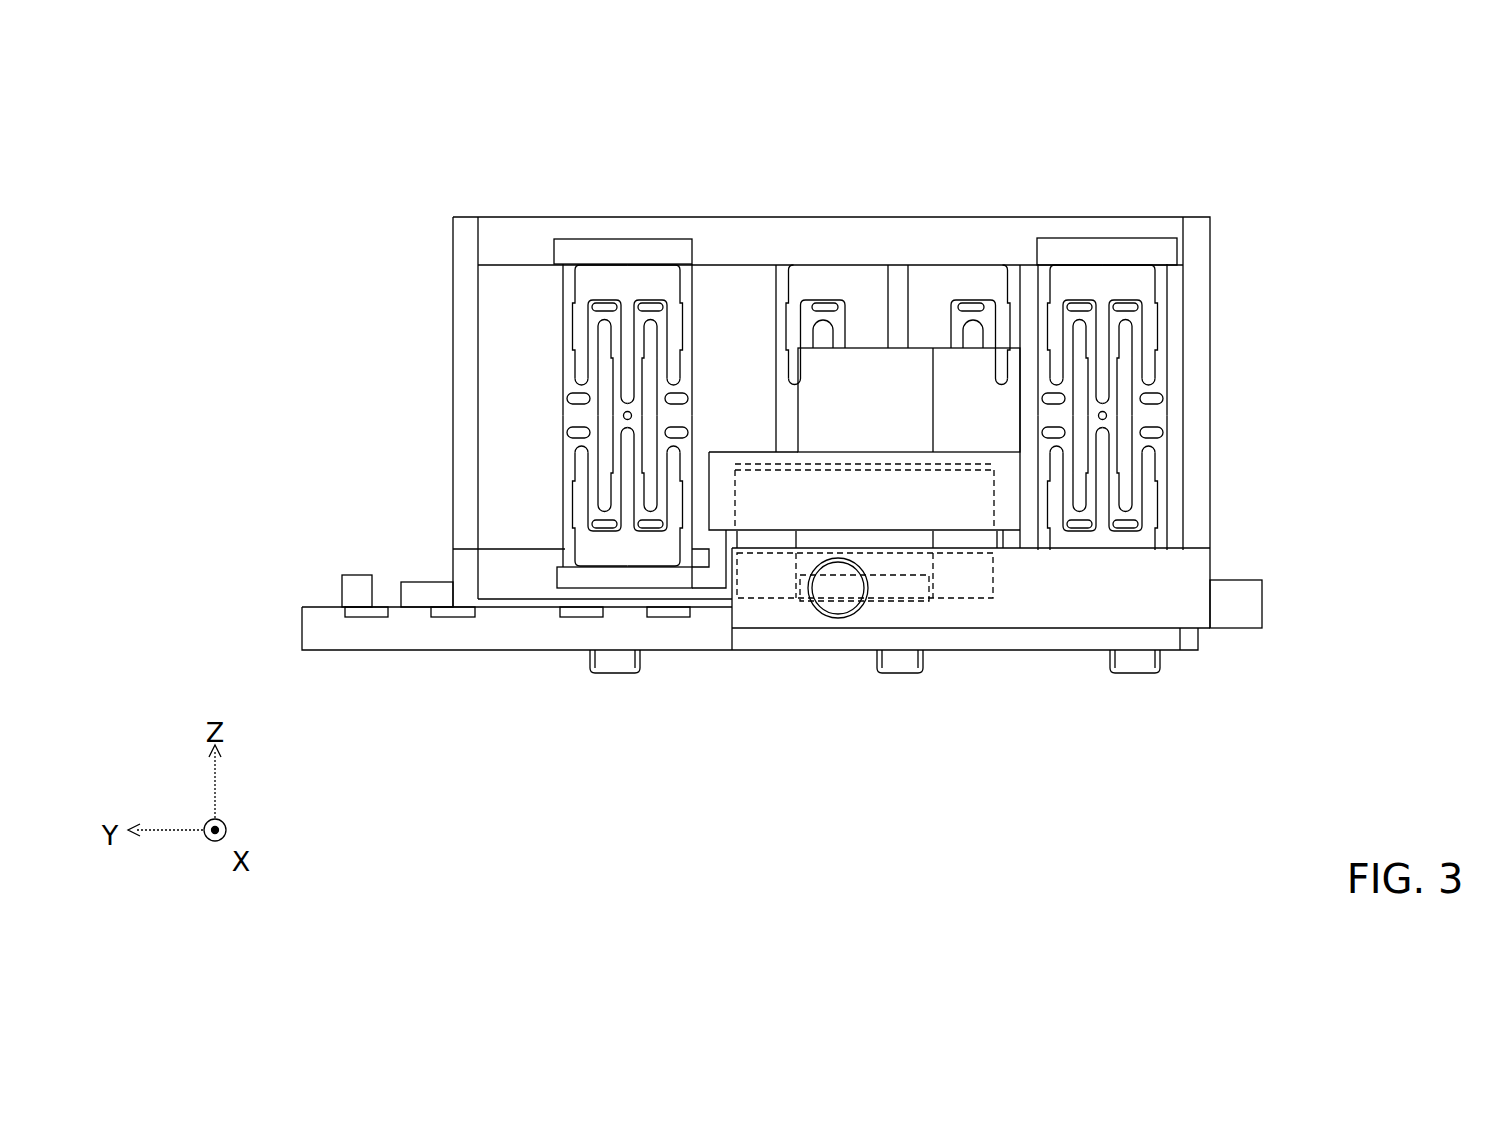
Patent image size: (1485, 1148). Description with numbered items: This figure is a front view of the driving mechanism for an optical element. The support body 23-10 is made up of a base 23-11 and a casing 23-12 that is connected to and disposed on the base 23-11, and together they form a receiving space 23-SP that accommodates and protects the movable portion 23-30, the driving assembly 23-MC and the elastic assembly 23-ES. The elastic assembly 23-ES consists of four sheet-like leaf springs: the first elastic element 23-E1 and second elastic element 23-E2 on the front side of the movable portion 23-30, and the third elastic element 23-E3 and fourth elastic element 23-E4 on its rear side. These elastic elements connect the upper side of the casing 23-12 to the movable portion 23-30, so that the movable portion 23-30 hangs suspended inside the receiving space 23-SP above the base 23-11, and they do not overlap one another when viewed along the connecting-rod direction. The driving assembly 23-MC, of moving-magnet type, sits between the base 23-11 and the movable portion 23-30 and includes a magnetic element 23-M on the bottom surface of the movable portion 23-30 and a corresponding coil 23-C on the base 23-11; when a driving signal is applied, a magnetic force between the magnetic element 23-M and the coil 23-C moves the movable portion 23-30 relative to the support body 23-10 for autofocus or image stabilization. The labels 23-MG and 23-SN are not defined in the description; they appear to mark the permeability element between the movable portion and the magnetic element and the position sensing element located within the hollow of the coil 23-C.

The elastic assembly 23-ES is at (865, 346).
The first elastic element 23-E1 is at (622, 251).
The second elastic element 23-E2 is at (1100, 252).
The third elastic element 23-E3 is at (818, 300).
The fourth elastic element 23-E4 is at (975, 347).
The receiving space 23-SP is at (515, 337).
The movable portion 23-30 is at (873, 403).
The magnetic element 23-MG is at (1012, 465).
The sensor 23-SN is at (893, 585).
The support body 23-10 is at (680, 445).
The casing 23-12 is at (463, 467).
The base 23-11 is at (345, 633).
The magnetic element 23-M is at (770, 505).
The coil 23-C is at (963, 575).
The driving assembly 23-MC is at (970, 646).